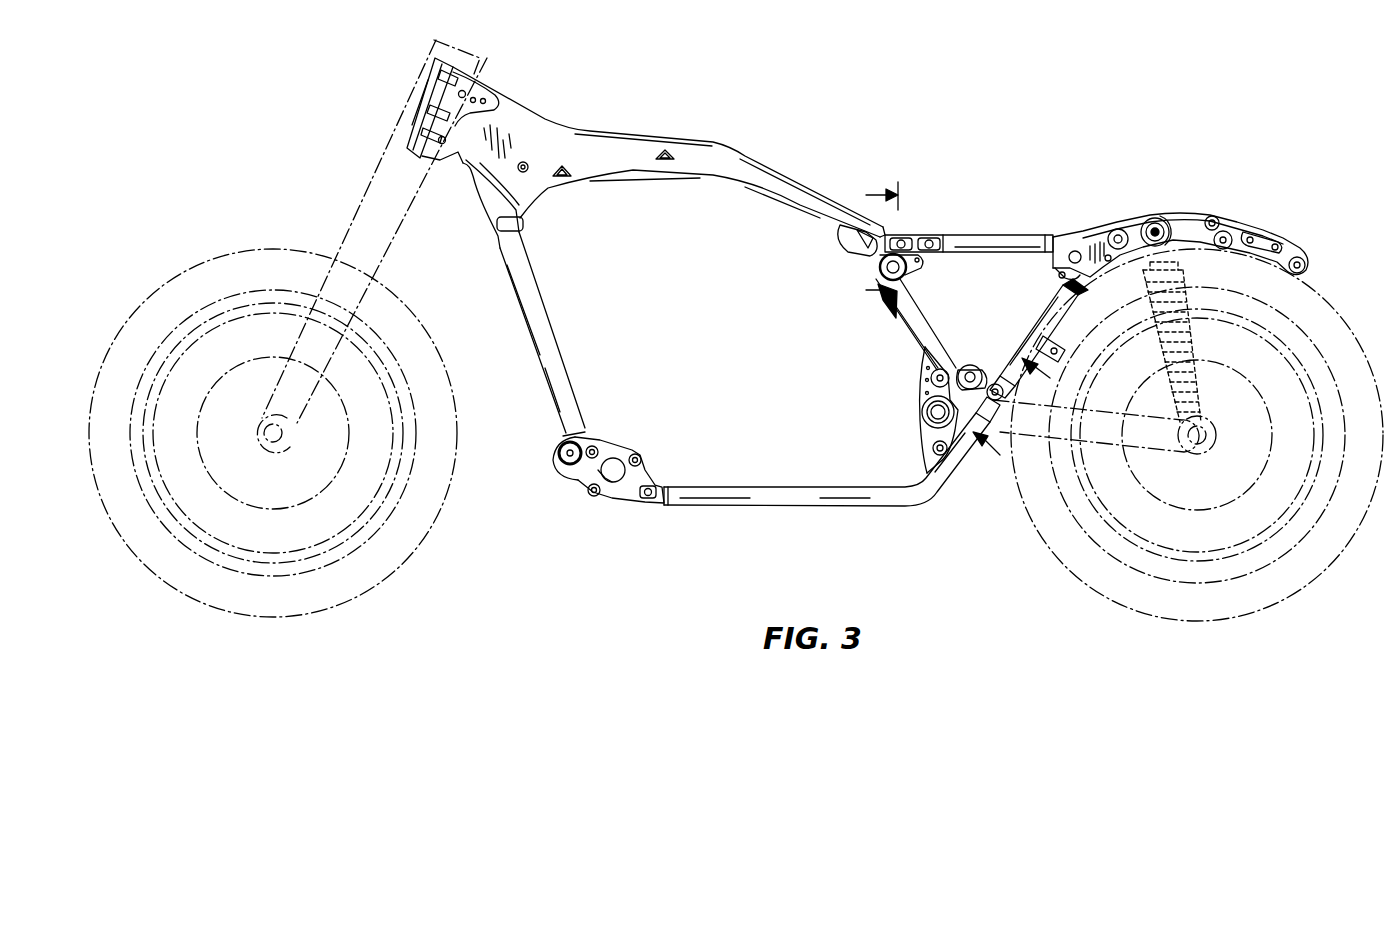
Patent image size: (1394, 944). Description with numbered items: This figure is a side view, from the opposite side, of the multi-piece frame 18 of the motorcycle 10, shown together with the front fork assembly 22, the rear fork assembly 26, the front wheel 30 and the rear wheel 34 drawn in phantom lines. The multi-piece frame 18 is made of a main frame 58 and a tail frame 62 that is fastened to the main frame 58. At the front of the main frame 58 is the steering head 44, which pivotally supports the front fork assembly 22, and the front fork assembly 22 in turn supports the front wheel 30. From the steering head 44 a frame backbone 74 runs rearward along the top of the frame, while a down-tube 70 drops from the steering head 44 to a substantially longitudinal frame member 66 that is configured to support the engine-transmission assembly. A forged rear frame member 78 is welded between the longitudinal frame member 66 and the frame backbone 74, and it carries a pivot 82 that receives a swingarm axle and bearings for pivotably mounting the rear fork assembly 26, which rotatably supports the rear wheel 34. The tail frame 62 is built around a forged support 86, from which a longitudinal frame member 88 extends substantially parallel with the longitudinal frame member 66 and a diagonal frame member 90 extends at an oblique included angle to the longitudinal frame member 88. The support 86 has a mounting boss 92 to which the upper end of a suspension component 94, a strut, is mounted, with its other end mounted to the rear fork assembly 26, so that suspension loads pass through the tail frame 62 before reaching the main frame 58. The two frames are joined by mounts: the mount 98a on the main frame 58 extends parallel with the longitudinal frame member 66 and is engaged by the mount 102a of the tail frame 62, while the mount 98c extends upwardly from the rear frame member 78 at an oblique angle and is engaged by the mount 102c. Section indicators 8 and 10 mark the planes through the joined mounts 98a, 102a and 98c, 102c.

The section line 8- 8 is at (872, 249).
The motorcycle 10 is at (1023, 414).
The multi-piece frame 18 is at (1042, 120).
The front fork assembly 22 is at (362, 198).
The rear fork assembly 26 is at (1070, 503).
The front wheel 30 is at (408, 562).
The rear wheel 34 is at (1279, 602).
The steering head 44 is at (423, 110).
The main frame 58 is at (786, 120).
The tail frame 62 is at (1105, 207).
The longitudinal frame members 66 is at (750, 487).
The down-tubes 70 is at (537, 313).
The frame backbone 74 is at (604, 154).
The rear frame members 78 is at (920, 325).
The pivot 82 is at (925, 425).
The supports 86 is at (1241, 230).
The longitudinal frame member 88 is at (1015, 240).
The diagonal frame member 90 is at (1052, 318).
The mounting boss 92 is at (1162, 216).
The suspension component 94 is at (1208, 350).
The mount 98a is at (863, 243).
The mount 98c is at (925, 386).
The mount 102a is at (930, 235).
The mount 102c is at (975, 362).